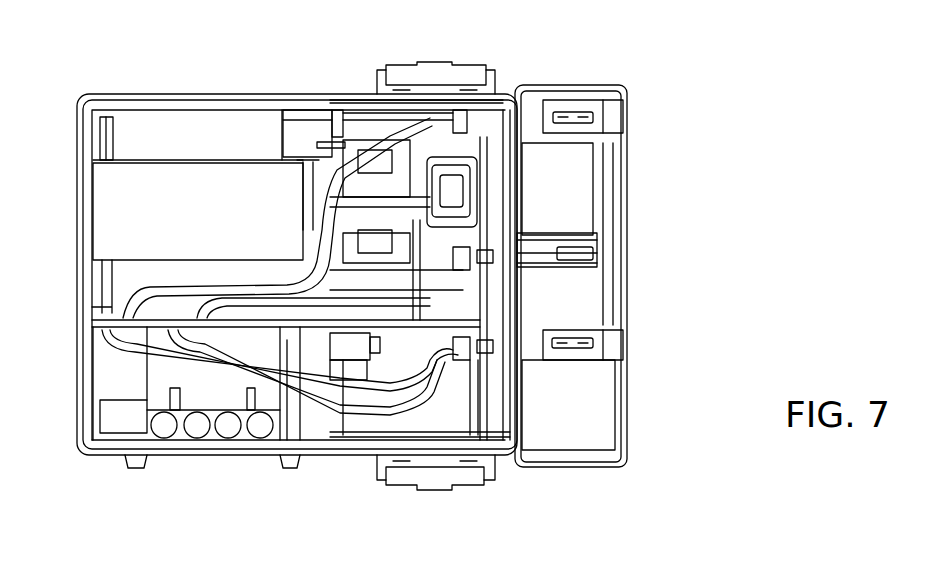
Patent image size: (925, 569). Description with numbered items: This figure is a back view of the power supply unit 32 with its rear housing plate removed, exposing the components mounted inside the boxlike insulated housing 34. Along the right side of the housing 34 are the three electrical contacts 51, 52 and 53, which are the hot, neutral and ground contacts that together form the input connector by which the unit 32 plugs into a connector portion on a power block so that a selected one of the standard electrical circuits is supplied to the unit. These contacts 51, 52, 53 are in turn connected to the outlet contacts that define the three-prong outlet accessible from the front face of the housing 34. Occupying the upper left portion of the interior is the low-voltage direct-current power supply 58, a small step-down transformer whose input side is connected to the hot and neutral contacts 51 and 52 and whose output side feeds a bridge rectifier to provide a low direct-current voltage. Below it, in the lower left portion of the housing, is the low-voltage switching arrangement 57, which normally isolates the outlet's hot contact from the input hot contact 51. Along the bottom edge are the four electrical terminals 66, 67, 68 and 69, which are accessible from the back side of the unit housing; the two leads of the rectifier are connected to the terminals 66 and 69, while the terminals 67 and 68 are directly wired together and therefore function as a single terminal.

The power supply unit 32 is at (224, 92).
The housing 34 is at (623, 383).
The hot contact 51 is at (570, 112).
The neutral contact 52 is at (577, 340).
The ground contact 53 is at (583, 237).
The low-voltage switching arrangement 57 is at (160, 380).
The low-voltage direct-current power supply 58 is at (150, 177).
The terminal 66 is at (163, 437).
The terminal 67 is at (200, 440).
The terminal 68 is at (228, 440).
The terminal 69 is at (260, 440).